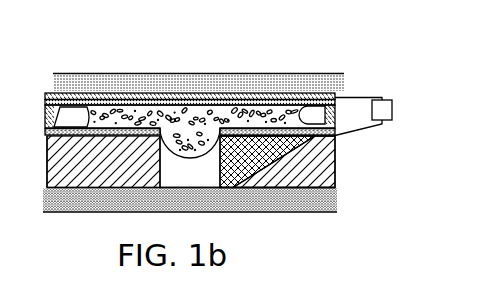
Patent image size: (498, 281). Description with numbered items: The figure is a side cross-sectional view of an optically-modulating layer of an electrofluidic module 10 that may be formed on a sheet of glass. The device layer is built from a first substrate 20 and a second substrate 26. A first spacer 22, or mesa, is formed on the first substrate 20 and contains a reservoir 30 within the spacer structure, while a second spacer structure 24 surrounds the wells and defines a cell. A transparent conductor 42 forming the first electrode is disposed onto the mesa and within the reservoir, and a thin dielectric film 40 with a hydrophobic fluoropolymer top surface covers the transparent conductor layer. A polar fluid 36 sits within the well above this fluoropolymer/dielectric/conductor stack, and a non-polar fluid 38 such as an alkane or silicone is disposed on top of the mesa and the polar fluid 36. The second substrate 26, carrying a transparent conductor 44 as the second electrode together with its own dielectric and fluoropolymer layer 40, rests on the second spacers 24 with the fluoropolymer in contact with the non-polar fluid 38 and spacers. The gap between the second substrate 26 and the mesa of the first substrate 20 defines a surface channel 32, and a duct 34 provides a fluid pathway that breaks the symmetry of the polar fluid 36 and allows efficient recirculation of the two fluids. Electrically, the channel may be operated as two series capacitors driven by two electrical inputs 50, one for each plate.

The electrofluidic module 10 is at (308, 55).
The first substrate 20 is at (110, 202).
The first spacer 22 is at (75, 173).
The second spacer structure 24 is at (50, 110).
The second substrate 26 is at (313, 87).
The reservoir 30 is at (174, 182).
The surface channel 32 is at (255, 120).
The duct 34 is at (238, 178).
The polar fluid 36 is at (213, 118).
The non-polar fluid 38 is at (255, 120).
The dielectric film 40 is at (96, 131).
The transparent conductor 42 is at (52, 140).
The transparent conductor 44 is at (142, 98).
The electrical inputs 50 is at (363, 117).